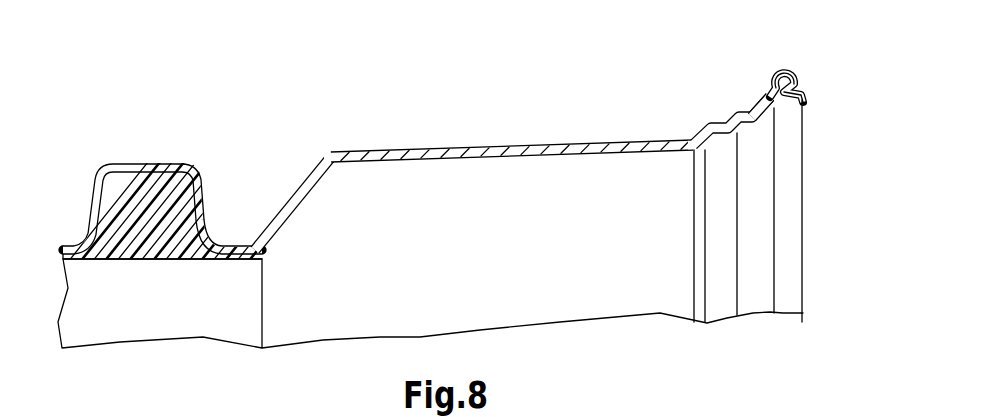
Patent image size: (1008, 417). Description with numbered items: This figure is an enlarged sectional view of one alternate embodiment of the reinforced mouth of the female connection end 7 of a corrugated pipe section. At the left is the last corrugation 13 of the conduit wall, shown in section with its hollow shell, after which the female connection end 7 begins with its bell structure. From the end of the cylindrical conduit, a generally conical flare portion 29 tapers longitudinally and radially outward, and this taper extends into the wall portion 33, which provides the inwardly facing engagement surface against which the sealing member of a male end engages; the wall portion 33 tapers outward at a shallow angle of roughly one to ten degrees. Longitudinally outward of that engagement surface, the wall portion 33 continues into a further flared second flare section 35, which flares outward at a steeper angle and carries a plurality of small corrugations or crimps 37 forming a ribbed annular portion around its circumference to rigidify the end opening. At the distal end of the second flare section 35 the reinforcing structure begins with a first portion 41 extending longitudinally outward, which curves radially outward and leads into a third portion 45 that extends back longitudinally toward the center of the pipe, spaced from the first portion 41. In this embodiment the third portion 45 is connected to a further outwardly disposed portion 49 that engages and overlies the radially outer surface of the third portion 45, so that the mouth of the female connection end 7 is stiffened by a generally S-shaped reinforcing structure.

The female connection end 7 is at (598, 98).
The corrugation 13 is at (157, 162).
The conical flare portion 29 is at (297, 205).
The wall portion 33 is at (467, 162).
The second flare section 35 is at (765, 115).
The crimps 37 is at (768, 103).
The first portion 41 is at (792, 100).
The third portion 45 is at (793, 83).
The outwardly disposed portion 49 is at (787, 75).